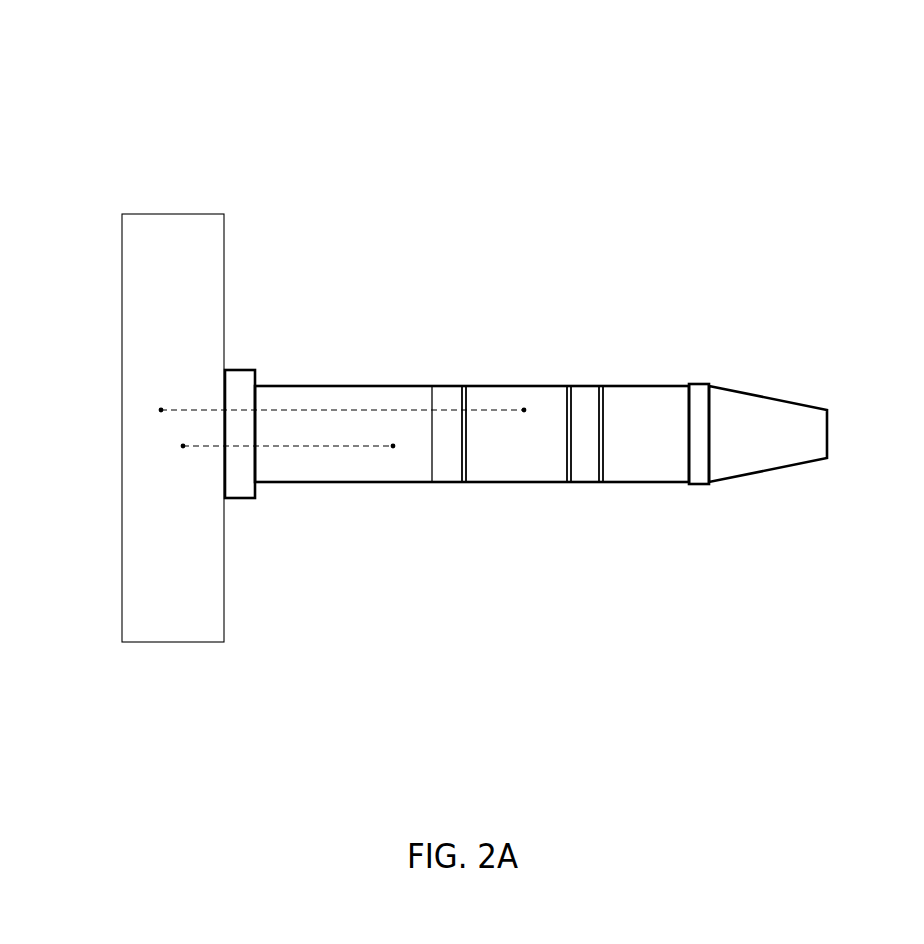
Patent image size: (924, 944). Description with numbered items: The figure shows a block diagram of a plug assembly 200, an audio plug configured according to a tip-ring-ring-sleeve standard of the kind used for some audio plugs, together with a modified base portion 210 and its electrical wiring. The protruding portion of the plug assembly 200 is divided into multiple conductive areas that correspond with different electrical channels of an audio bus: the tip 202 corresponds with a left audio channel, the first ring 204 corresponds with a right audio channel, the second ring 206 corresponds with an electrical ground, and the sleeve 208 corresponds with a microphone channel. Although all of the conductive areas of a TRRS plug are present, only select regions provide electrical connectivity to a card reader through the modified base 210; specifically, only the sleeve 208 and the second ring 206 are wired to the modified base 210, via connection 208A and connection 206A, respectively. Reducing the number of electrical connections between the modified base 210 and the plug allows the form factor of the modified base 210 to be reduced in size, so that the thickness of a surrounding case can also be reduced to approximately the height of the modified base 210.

The plug assembly 200 is at (462, 92).
The tip 202 is at (829, 410).
The first ring 204 is at (651, 386).
The second ring 206 is at (493, 483).
The connection 206A is at (282, 447).
The sleeve 208 is at (410, 483).
The connection 208A is at (347, 408).
The modified base portion 210 is at (187, 213).